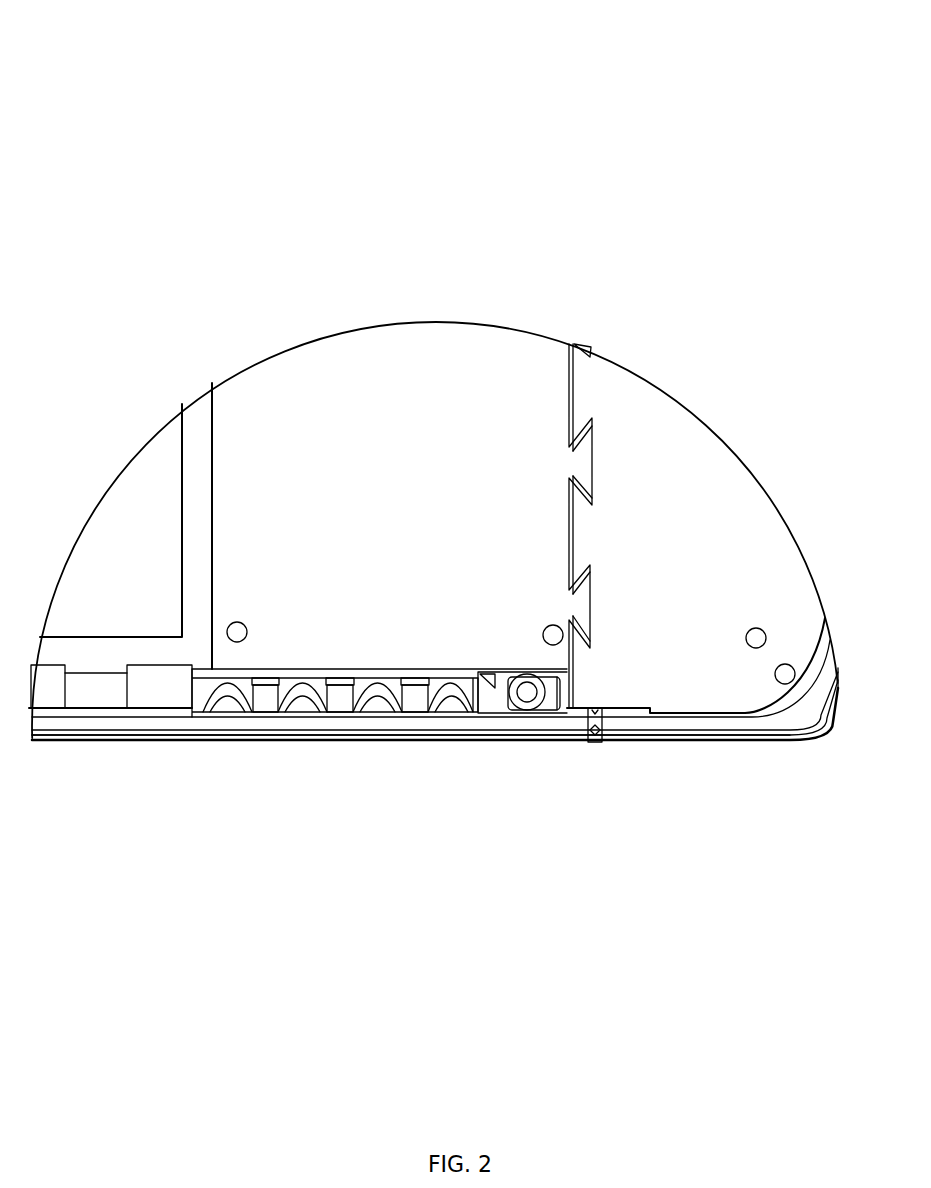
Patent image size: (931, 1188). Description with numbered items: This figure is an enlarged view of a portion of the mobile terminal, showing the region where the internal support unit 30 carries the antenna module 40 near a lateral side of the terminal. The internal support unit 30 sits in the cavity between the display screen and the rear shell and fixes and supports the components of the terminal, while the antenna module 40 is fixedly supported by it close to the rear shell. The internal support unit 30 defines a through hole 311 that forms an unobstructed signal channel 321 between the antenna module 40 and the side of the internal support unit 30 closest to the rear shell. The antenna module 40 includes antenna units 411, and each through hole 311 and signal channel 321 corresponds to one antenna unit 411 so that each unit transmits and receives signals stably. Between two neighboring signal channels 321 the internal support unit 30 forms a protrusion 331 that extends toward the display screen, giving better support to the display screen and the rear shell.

The internal support unit 30 is at (842, 62).
The signal channel 321 is at (212, 698).
The protrusion 331 is at (266, 697).
The through hole 311 is at (378, 740).
The antenna unit 411 is at (473, 687).
The antenna module 40 is at (488, 682).